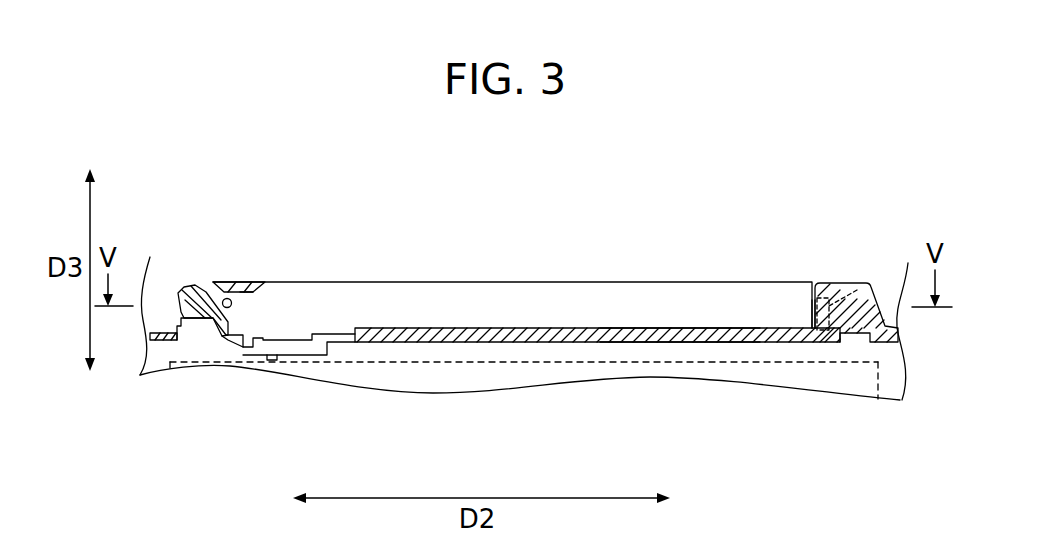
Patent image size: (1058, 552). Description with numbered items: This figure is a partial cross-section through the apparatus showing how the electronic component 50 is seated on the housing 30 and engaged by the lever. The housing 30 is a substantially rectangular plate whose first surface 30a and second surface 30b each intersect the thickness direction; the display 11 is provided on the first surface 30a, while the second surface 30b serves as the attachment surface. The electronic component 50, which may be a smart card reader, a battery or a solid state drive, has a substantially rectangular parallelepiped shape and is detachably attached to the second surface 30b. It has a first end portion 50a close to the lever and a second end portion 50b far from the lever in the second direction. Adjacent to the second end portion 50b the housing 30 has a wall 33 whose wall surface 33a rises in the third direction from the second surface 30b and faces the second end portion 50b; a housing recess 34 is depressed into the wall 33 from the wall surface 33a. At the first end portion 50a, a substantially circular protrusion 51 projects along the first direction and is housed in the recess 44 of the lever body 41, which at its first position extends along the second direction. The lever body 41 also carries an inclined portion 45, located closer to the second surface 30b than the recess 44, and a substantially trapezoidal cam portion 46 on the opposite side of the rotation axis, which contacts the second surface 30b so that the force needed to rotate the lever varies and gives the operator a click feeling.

The display 11 is at (433, 375).
The housing 30 is at (625, 345).
The first surface 30a is at (691, 350).
The second surface 30b is at (678, 320).
The wall 33 is at (818, 297).
The wall surface 33a is at (801, 296).
The housing recess 34 is at (857, 290).
The lever body 41 is at (198, 293).
The recess 44 is at (227, 300).
The inclined portion 45 is at (233, 322).
The cam portion 46 is at (190, 292).
The electronic component 50 is at (583, 303).
The first end portion 50a is at (252, 303).
The second end portion 50b is at (793, 315).
The protrusion 51 is at (229, 292).